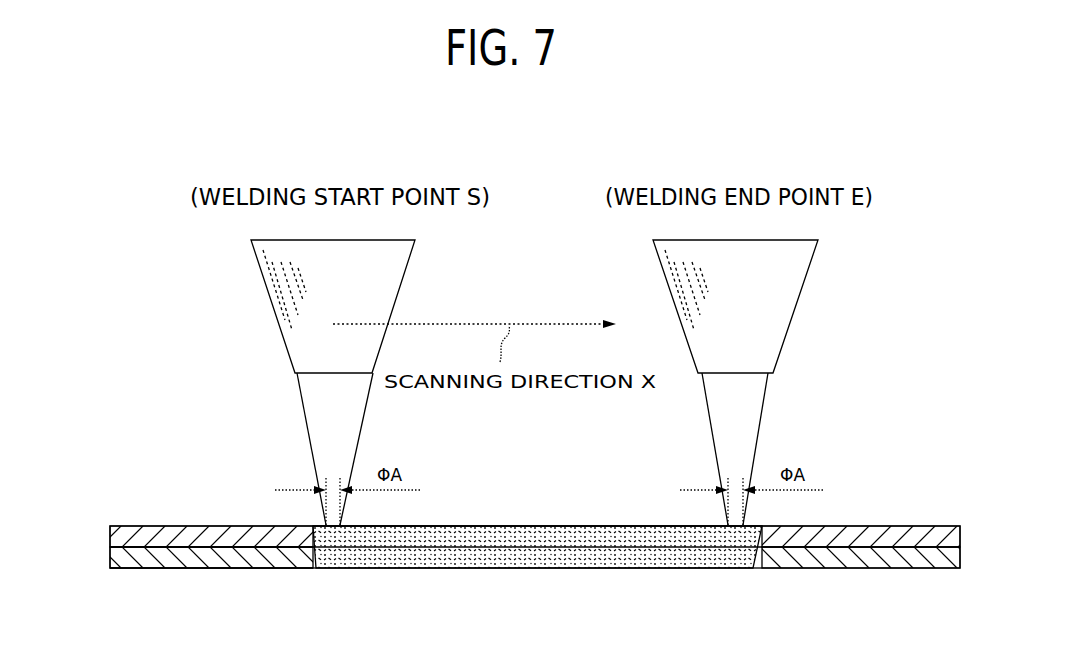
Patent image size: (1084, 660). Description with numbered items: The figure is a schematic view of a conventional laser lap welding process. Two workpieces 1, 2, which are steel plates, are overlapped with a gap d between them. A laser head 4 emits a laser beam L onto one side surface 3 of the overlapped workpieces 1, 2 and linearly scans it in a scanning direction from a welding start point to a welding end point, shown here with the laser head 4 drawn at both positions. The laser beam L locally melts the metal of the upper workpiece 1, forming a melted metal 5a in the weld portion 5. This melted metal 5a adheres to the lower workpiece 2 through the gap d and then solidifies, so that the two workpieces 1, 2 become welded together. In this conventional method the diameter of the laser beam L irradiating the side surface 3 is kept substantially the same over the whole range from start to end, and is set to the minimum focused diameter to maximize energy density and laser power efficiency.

The workpiece 1 is at (110, 536).
The workpiece 2 is at (110, 558).
The side surface 3 is at (133, 527).
The laser head 4 is at (272, 296).
The melted metal 5 is at (518, 568).
The melted metal 5a is at (540, 545).
The gap d is at (210, 547).
The laser beam L is at (313, 410).